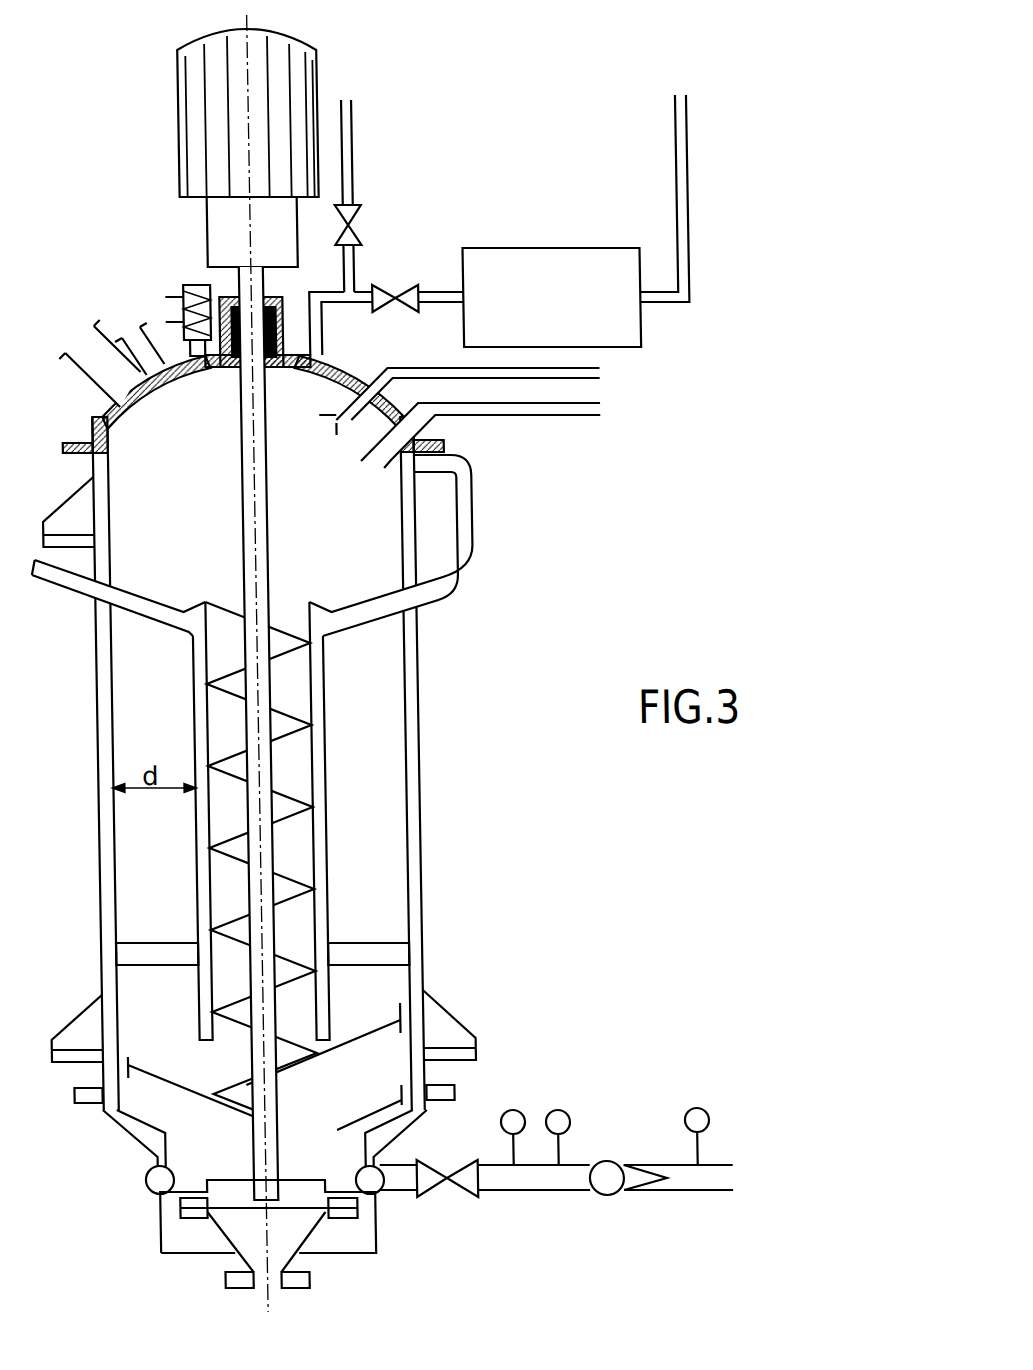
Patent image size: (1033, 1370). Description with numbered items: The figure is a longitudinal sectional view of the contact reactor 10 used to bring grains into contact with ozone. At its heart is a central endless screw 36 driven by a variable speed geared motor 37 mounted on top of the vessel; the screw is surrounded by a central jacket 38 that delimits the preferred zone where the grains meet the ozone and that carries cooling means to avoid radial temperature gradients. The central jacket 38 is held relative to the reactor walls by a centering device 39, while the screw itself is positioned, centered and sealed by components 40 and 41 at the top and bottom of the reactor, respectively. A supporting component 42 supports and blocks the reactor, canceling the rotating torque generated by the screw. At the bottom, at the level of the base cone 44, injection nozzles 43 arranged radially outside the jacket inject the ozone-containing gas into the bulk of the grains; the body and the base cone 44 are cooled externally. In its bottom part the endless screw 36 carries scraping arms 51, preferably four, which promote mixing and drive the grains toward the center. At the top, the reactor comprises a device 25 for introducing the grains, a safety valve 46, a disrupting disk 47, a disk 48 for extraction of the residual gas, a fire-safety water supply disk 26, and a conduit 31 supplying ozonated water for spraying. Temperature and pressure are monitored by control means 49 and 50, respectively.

The contact reactor 10 is at (448, 720).
The device for introducing the grains to be treated 25 is at (102, 372).
The disk for supplying with water 26 is at (462, 373).
The conduit 31 is at (559, 418).
The central endless screw 36 is at (272, 832).
The variable speed geared motor 37 is at (212, 131).
The central jacket 38 is at (318, 742).
The centering device 39 is at (143, 951).
The positioning and centering component 40 is at (239, 368).
The positioning and centering component 41 is at (282, 1196).
The supporting component 42 is at (71, 507).
The injection nozzles 43 is at (136, 1180).
The base cone 44 is at (116, 1130).
The safety valve 46 is at (203, 284).
The disrupting disk 47 is at (158, 357).
The disk for extraction of the residual gas 48 is at (379, 300).
The temperature control means 49 is at (508, 1112).
The pressure control means 50 is at (554, 1112).
The scraping arms 51 is at (122, 1054).